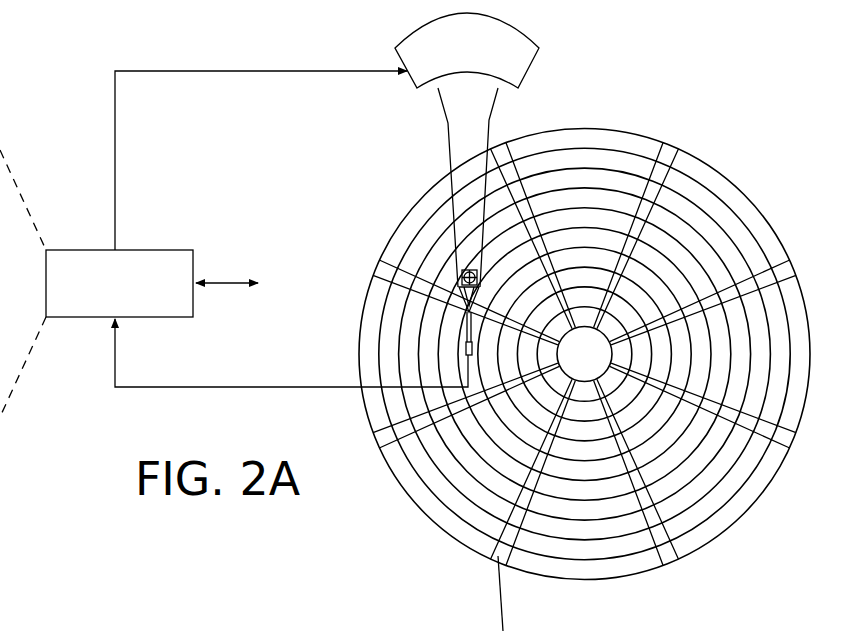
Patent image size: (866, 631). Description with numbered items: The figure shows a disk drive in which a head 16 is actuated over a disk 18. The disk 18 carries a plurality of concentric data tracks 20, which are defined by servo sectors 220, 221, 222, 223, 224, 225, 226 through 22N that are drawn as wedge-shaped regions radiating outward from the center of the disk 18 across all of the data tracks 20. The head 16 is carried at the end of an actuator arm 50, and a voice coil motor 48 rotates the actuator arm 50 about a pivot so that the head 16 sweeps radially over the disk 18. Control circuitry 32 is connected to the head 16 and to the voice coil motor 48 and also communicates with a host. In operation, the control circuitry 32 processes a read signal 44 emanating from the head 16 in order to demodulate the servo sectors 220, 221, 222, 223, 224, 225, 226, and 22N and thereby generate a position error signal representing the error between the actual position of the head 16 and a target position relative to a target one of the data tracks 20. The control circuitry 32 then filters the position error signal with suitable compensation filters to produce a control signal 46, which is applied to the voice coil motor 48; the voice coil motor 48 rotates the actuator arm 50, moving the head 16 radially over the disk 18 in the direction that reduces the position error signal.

The head 16 is at (461, 357).
The disk 18 is at (740, 178).
The data tracks 20 is at (586, 160).
The servo sector 220 is at (673, 150).
The servo sector 221 is at (787, 273).
The servo sector 222 is at (790, 443).
The servo sector 223 is at (663, 561).
The servo sector 224 is at (492, 556).
The servo sector 225 is at (378, 443).
The servo sector 226 is at (383, 263).
The servo sector 22N is at (506, 148).
The control circuitry 32 is at (160, 250).
The read signal 44 is at (257, 387).
The control signal 46 is at (115, 147).
The voice coil motor 48 is at (413, 85).
The actuator arm 50 is at (450, 160).